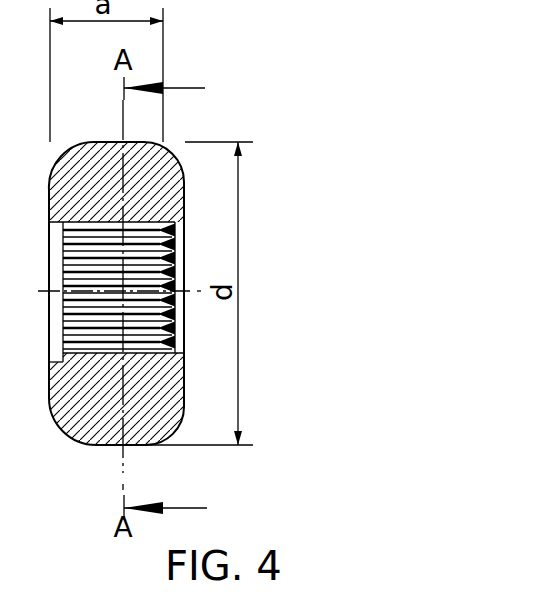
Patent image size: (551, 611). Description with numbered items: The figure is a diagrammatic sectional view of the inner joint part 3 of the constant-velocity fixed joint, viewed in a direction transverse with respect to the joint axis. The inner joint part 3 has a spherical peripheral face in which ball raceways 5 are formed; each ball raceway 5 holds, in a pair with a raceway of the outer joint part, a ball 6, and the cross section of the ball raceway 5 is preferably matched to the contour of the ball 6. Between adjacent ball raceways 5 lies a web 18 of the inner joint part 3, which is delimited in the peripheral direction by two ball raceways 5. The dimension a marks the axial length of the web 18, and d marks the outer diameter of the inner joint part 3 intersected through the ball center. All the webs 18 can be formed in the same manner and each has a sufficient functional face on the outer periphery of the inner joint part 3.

The inner joint part 3 is at (161, 172).
The web on inner joint part 18 is at (87, 157).
The ball 6 is at (87, 286).
The ball raceway of the inner joint part 5 is at (100, 307).